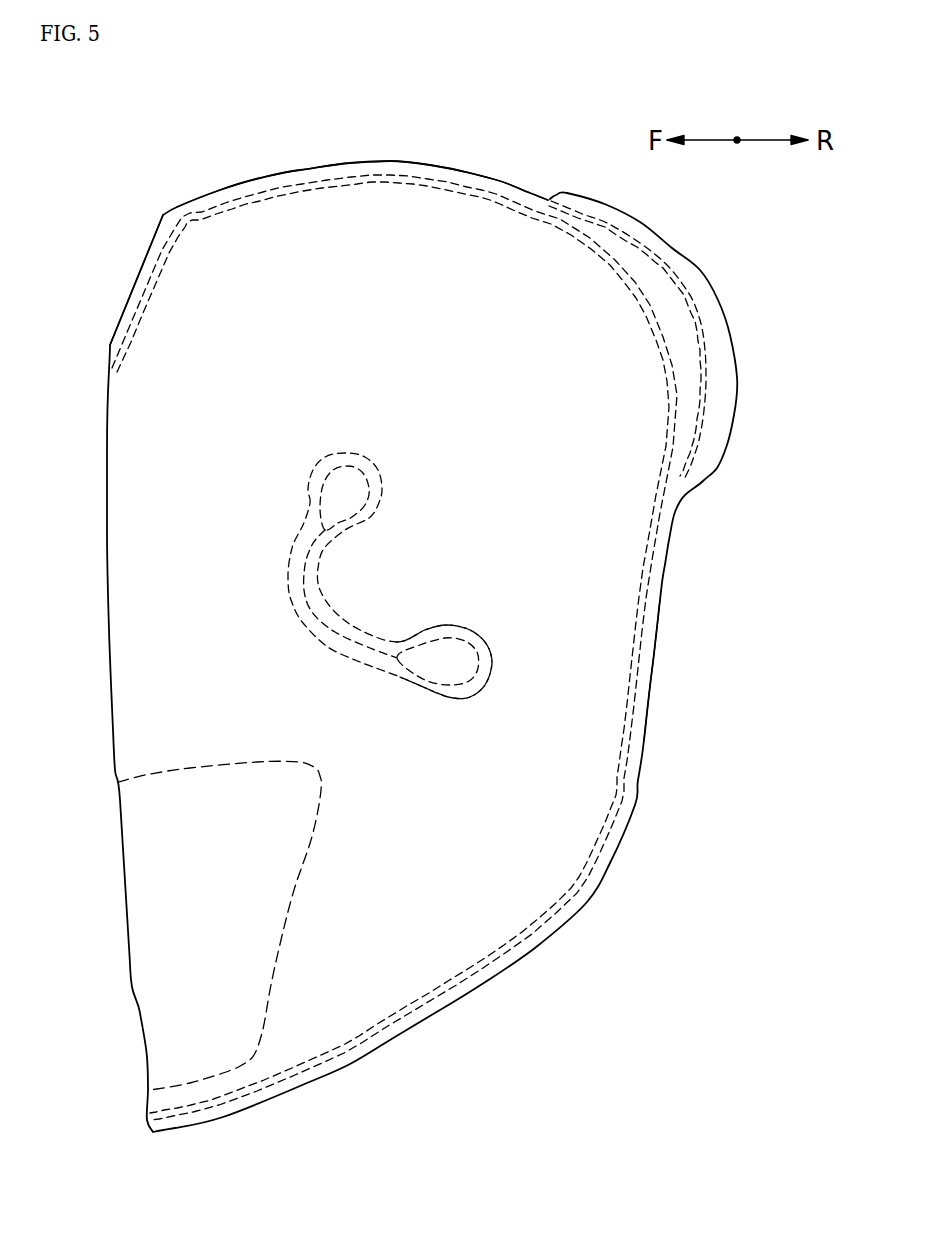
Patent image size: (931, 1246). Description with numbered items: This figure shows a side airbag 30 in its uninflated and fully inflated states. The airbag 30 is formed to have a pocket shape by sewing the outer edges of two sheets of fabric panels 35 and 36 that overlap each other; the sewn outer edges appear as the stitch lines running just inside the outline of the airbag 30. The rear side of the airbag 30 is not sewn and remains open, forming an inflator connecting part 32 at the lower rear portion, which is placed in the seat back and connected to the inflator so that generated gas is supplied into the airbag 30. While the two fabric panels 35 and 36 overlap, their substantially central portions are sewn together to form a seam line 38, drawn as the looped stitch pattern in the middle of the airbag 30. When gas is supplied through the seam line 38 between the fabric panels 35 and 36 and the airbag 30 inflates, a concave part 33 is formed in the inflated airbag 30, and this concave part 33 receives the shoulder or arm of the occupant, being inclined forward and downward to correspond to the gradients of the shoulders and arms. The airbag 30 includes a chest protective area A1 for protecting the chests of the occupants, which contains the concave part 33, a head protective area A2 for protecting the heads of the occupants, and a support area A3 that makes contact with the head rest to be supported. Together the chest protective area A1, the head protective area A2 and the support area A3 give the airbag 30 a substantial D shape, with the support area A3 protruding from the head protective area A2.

The airbag 30 is at (512, 182).
The inflator connecting part 32 is at (153, 942).
The concave part 33 is at (337, 555).
The fabric panel 35 is at (385, 228).
The fabric panel 36 is at (457, 168).
The seam line 38 is at (480, 688).
The chest protective area A1 is at (523, 645).
The head protective area A2 is at (185, 318).
The support area A3 is at (593, 330).